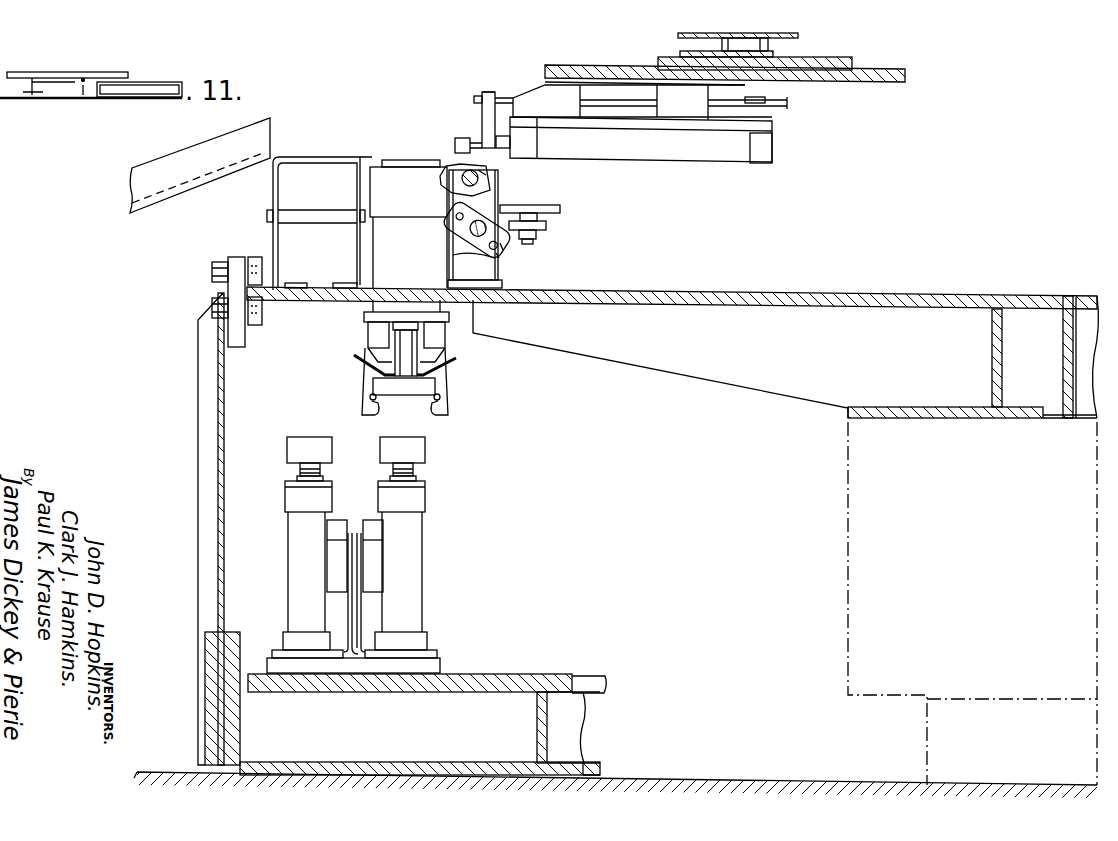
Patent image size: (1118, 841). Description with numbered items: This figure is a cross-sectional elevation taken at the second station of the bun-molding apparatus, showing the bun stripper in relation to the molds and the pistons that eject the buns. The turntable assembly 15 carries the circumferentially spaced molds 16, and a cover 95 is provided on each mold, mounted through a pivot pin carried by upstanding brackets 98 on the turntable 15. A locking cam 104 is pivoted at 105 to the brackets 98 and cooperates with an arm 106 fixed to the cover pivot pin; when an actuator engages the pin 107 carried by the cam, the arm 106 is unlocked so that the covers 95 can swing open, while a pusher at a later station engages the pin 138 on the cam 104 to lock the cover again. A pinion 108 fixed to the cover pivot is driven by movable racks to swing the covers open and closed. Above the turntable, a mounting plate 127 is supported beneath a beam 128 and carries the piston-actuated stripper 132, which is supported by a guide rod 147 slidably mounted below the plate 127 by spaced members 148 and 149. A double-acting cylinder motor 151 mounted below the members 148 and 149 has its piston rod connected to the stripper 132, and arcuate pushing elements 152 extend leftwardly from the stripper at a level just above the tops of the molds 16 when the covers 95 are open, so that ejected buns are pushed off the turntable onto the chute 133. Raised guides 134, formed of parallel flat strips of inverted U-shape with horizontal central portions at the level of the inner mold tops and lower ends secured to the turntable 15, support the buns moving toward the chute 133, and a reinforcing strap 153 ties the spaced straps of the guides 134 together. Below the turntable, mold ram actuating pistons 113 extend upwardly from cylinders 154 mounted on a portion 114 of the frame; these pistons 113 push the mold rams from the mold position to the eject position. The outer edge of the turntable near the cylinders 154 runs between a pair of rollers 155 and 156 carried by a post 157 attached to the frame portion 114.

The turntable assembly 15 is at (334, 302).
The molds 16 is at (422, 143).
The cover 95 is at (566, 213).
The upstanding brackets 98 is at (468, 268).
The locking cam 104 is at (460, 237).
The pivot 105 is at (502, 243).
The arm 106 is at (487, 187).
The pin 107 is at (454, 213).
The pinion 108 is at (477, 165).
The mold ram actuating pistons 113 is at (418, 450).
The frame portion 114 is at (465, 707).
The mounting plate 127 is at (900, 85).
The beam 128 is at (735, 50).
The stripper 132 is at (489, 91).
The chute 133 is at (130, 187).
The raised guides 134 is at (326, 158).
The pin 138 is at (497, 253).
The guide rod 147 is at (498, 97).
The spaced member 148 is at (560, 92).
The spaced member 149 is at (708, 98).
The double-acting cylinder motor 151 is at (683, 150).
The arcuate pushing elements 152 is at (462, 138).
The reinforcing strap 153 is at (303, 210).
The cylinders 154 is at (407, 558).
The roller 155 is at (258, 238).
The roller 156 is at (262, 330).
The post 157 is at (205, 373).